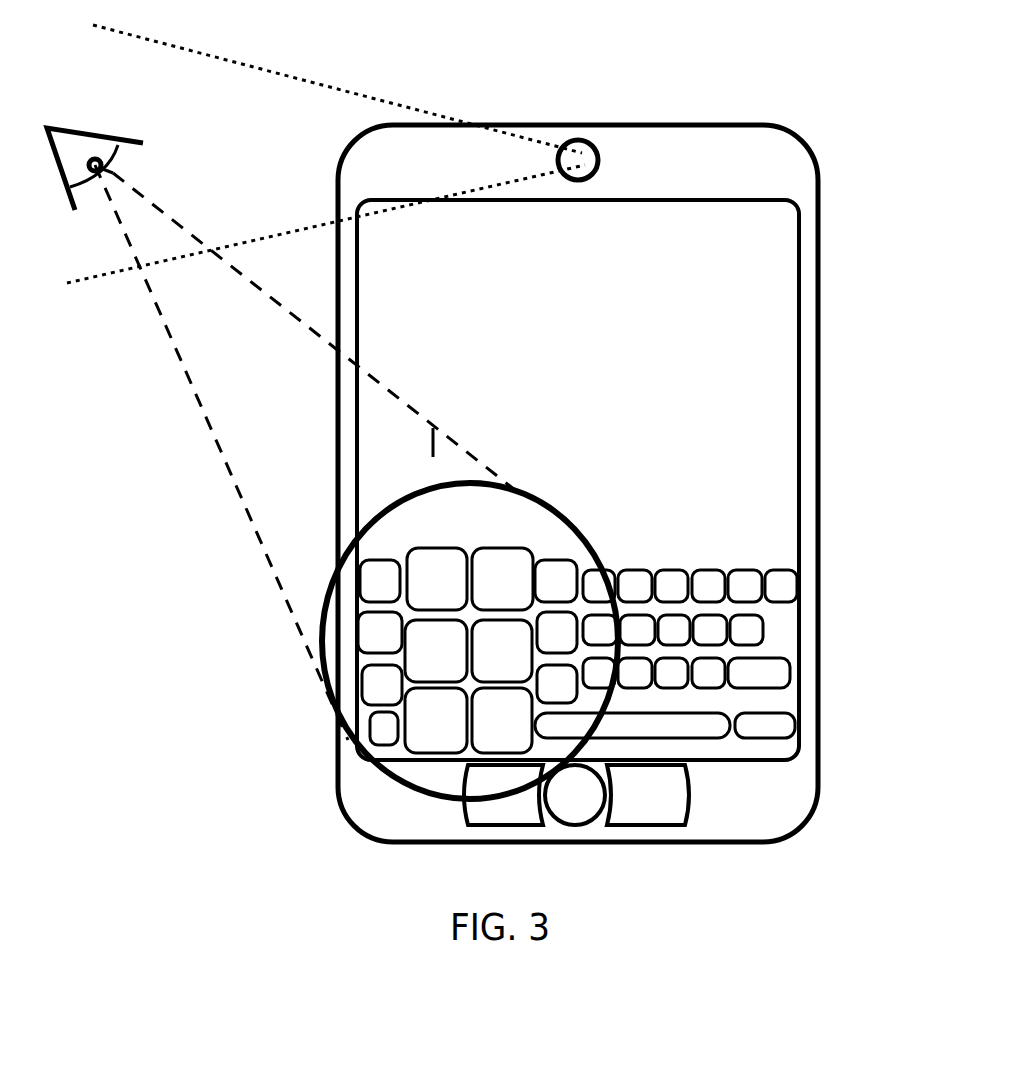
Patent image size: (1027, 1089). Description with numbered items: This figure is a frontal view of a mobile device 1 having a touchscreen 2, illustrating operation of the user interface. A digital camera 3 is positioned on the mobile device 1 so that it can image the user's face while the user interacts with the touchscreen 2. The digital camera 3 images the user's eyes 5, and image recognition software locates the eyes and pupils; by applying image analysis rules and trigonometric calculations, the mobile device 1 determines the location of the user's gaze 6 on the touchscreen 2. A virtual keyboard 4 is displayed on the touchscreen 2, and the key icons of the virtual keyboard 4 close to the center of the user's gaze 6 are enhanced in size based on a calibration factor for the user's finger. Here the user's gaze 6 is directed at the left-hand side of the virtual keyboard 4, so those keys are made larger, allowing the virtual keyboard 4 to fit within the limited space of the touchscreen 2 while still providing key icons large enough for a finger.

The mobile device 1 is at (818, 402).
The touchscreen 2 is at (782, 225).
The digital camera 3 is at (585, 137).
The virtual keyboard 4 is at (788, 548).
The user's eyes 5 is at (125, 131).
The user's gaze 6 is at (575, 510).